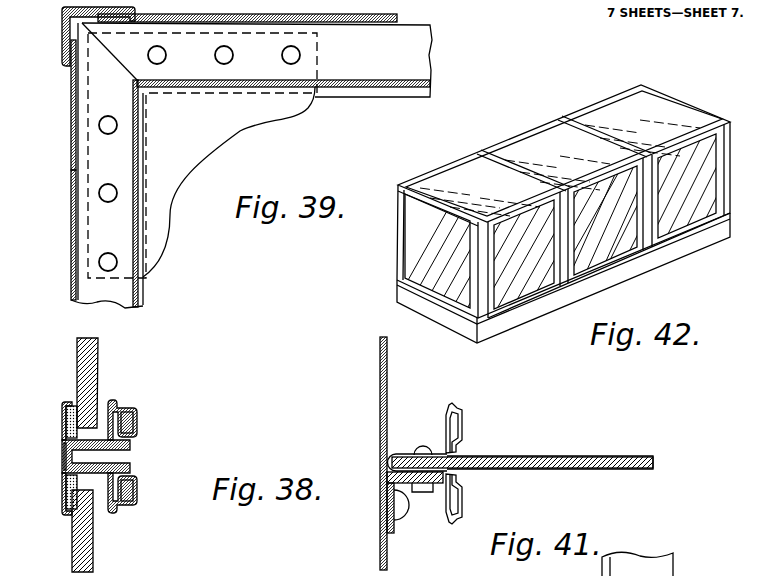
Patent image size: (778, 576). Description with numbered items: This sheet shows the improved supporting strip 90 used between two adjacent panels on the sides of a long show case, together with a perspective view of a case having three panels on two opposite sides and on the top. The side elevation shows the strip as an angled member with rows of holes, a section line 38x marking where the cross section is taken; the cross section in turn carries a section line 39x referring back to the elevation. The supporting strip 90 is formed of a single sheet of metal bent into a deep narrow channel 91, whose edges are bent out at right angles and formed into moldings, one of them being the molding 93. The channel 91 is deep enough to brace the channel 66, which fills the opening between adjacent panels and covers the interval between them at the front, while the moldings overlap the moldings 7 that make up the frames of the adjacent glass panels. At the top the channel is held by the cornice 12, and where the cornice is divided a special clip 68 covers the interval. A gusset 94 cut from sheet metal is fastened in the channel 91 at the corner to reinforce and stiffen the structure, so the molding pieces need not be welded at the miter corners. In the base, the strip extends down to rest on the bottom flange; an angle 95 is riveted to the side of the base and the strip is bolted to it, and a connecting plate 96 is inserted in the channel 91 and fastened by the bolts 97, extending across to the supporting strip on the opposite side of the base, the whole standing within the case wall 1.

In FIG. 41, the wall 1 is at (381, 386).
In FIG. 38, the molding 7 is at (116, 401).
In FIG. 39, the cornice 12 is at (72, 42).
In FIG. 39, the channel 66 is at (71, 240).
In FIG. 38, the channel 66 is at (63, 456).
In FIG. 39, the special clip 68 is at (62, 21).
In FIG. 38, the supporting strip 90 is at (137, 411).
In FIG. 38, the deep narrow channel 91 is at (62, 443).
In FIG. 41, the deep narrow channel 91 is at (398, 455).
In FIG. 38, the molding 93 is at (137, 513).
In FIG. 39, the gusset 94 is at (228, 130).
In FIG. 41, the angle 95 is at (386, 528).
In FIG. 41, the connecting plate 96 is at (607, 470).
In FIG. 41, the bolts 97 is at (421, 447).
In FIG. 39, the section line 38x is at (186, 295).
In FIG. 38, the section line 39 39x is at (160, 473).